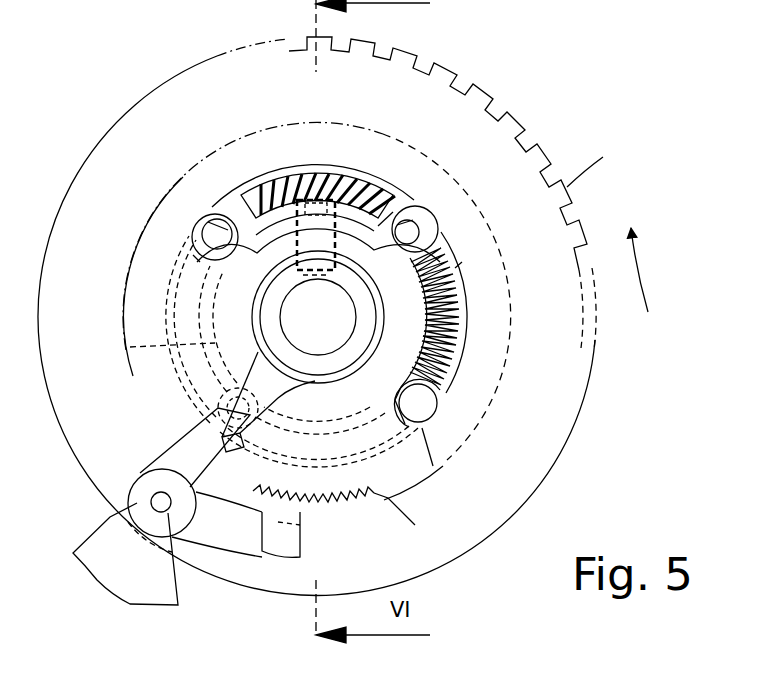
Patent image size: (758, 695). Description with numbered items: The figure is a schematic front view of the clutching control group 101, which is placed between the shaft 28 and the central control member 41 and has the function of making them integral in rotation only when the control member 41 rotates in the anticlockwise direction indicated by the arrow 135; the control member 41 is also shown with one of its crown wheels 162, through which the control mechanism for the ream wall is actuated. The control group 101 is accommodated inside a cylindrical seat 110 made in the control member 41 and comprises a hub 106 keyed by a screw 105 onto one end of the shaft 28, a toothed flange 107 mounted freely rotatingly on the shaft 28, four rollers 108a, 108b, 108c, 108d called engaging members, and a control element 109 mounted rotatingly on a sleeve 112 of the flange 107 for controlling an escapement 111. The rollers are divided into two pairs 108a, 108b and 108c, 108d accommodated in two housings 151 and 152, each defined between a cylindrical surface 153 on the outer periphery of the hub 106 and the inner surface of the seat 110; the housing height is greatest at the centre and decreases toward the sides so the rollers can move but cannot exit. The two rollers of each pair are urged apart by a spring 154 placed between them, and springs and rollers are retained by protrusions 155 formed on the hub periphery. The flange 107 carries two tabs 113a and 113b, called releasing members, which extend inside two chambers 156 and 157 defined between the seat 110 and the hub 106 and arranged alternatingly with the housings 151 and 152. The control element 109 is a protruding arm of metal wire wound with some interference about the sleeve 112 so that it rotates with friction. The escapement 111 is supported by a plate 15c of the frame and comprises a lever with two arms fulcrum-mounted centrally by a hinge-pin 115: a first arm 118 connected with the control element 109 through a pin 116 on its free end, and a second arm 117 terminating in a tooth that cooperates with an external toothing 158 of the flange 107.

The central control member 41 is at (560, 447).
The crown wheel 162 is at (490, 100).
The arrow 135 is at (646, 267).
The toothed flange 107 is at (133, 372).
The screw 105 is at (247, 180).
The control group 101 is at (258, 158).
The tab 113a is at (334, 163).
The chamber 156 is at (312, 160).
The hub 106 is at (378, 226).
The protrusions 155 is at (218, 256).
The roller 108a is at (425, 218).
The roller 108b is at (432, 412).
The roller 108c is at (232, 410).
The roller 108d is at (212, 226).
The cylindrical seat 110 is at (193, 255).
The spring 154 is at (177, 268).
The cylindrical surface 153 is at (130, 347).
The housing 152 is at (182, 322).
The housing 151 is at (462, 360).
The sleeve 112 is at (268, 306).
The shaft 28 is at (333, 350).
The control element 109 is at (272, 405).
The first arm 118 is at (180, 457).
The pin 116 is at (222, 436).
The hinge-pin 115 is at (151, 501).
The escapement 111 is at (237, 603).
The second arm 117 is at (302, 530).
The external toothing 158 is at (388, 510).
The chamber 157 is at (292, 466).
The tab 113b is at (338, 448).
The plate 15c is at (122, 582).